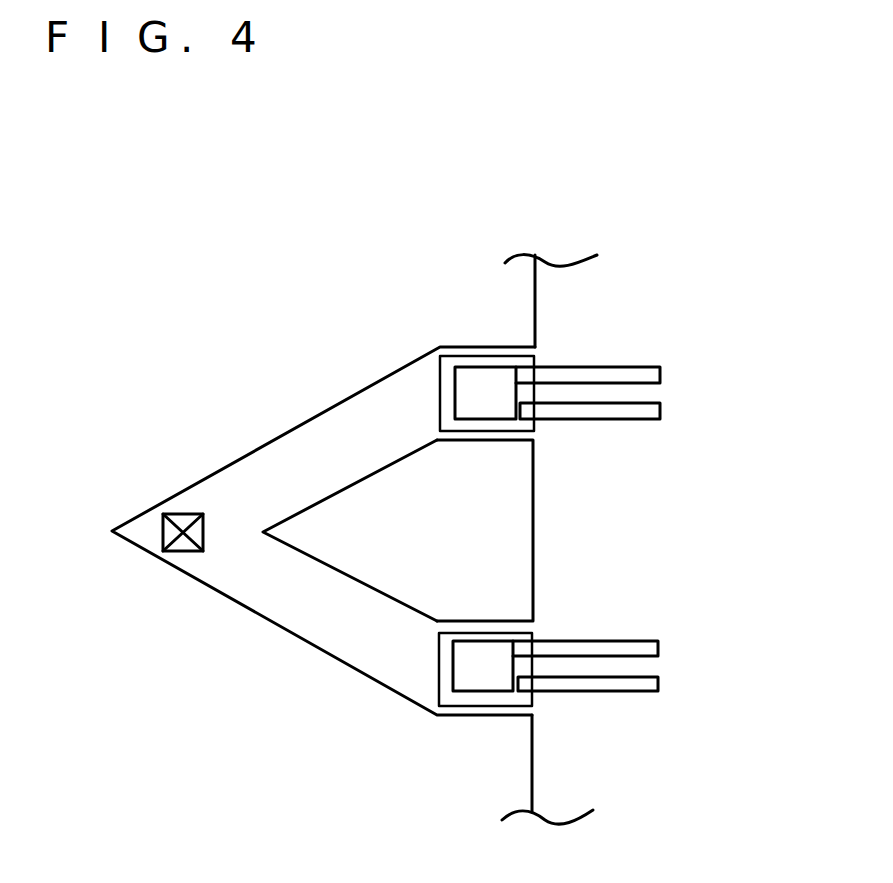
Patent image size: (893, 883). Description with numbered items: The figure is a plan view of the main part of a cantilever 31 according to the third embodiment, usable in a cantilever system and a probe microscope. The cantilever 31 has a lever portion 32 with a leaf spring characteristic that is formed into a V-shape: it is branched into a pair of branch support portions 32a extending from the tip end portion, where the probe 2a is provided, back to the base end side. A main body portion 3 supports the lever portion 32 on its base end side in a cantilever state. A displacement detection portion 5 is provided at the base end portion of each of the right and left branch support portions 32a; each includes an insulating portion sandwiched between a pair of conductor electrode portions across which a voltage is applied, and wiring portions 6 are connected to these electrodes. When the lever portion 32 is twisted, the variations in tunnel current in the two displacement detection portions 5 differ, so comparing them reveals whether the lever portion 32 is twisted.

The probe 2a is at (182, 514).
The main body portion 3 is at (533, 306).
The displacement detection portion 5 is at (482, 358).
The wiring portions 6 is at (612, 367).
The cantilever 31 is at (258, 375).
The lever portion 32 is at (293, 643).
The branch support portions 32a is at (327, 502).